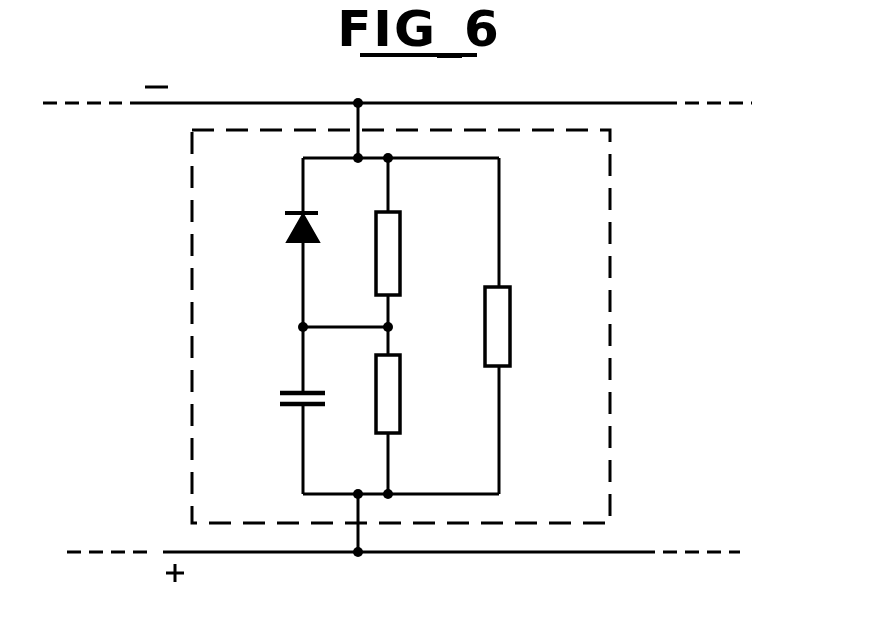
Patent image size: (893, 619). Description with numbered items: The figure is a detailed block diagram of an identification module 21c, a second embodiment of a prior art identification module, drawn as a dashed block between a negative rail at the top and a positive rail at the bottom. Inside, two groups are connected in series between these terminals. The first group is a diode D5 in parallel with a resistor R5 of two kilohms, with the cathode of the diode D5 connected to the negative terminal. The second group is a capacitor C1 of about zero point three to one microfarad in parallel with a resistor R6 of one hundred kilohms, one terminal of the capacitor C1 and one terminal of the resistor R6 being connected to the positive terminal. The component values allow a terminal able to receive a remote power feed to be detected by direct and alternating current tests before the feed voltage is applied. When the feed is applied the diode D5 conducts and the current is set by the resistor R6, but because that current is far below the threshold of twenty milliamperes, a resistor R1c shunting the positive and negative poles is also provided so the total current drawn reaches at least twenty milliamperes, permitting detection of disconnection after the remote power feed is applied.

The identification module 21c is at (610, 200).
The diode D5 is at (290, 224).
The resistor R5 is at (401, 243).
The resistor R6 is at (401, 398).
The resistor R1c is at (511, 312).
The capacitor C1 is at (290, 407).